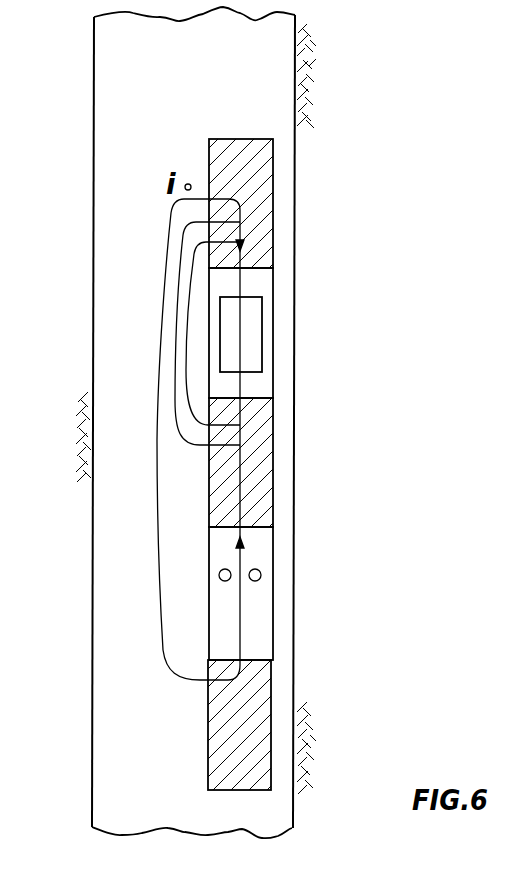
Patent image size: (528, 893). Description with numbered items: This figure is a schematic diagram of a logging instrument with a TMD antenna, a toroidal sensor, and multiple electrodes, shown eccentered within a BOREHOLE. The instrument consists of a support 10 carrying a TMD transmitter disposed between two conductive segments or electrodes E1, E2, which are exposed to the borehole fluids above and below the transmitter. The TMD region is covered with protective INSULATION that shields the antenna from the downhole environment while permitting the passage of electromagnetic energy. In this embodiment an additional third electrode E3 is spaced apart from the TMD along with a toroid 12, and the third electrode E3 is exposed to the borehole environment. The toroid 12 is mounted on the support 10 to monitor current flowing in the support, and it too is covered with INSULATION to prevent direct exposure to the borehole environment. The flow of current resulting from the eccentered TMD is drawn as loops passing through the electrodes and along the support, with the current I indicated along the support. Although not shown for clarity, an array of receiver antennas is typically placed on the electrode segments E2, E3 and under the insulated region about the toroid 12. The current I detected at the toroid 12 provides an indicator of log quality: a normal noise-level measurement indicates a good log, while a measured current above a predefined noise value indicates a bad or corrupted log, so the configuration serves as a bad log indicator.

The support 10 is at (365, 445).
The electrode E1 is at (273, 226).
The electrode E2 is at (276, 430).
The third electrode E3 is at (262, 719).
The insulation INSULATION is at (273, 273).
The TMD transmitter TMD is at (263, 347).
The toroid 12 is at (230, 581).
The borehole BOREHOLE is at (295, 650).
The measured current I is at (205, 439).